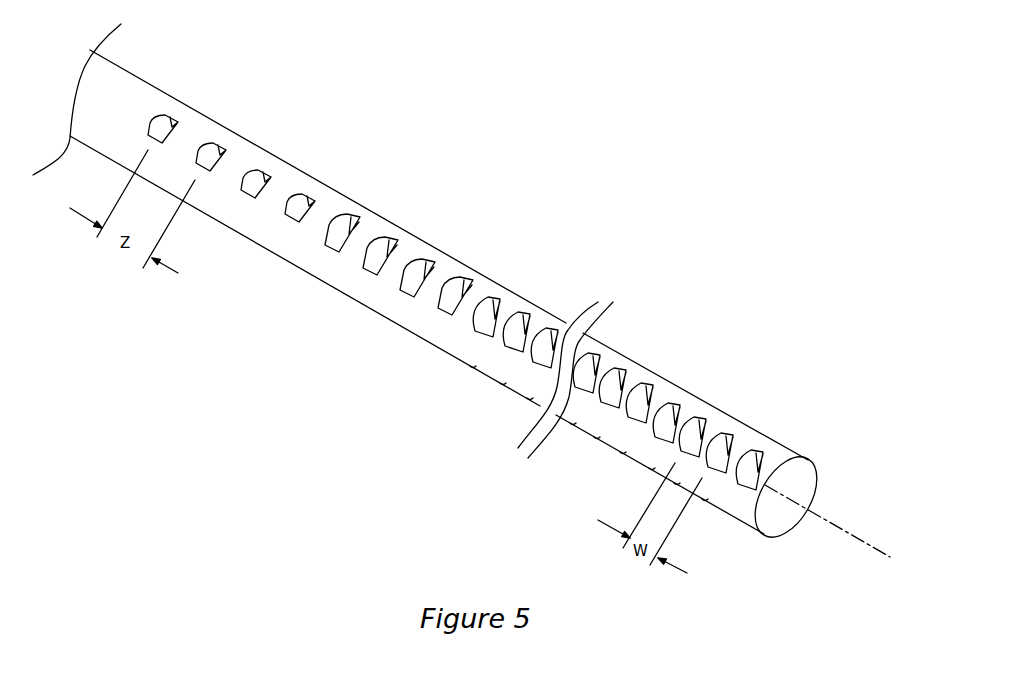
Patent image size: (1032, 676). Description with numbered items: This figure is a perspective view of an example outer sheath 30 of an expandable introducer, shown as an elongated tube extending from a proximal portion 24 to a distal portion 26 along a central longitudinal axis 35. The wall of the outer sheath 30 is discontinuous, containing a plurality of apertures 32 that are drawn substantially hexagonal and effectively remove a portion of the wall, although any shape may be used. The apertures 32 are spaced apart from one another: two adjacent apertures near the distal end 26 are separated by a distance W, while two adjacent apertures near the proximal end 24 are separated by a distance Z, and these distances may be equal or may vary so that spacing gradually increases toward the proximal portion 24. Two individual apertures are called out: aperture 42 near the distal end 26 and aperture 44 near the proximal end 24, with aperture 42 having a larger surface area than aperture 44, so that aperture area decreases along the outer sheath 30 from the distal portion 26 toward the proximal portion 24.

The proximal portion 24 is at (176, 66).
The distal portion 26 is at (815, 443).
The outer sheath 30 is at (603, 173).
The apertures 32 is at (275, 160).
The longitudinal axis 35 is at (862, 537).
The aperture 42 is at (628, 422).
The aperture 44 is at (173, 118).